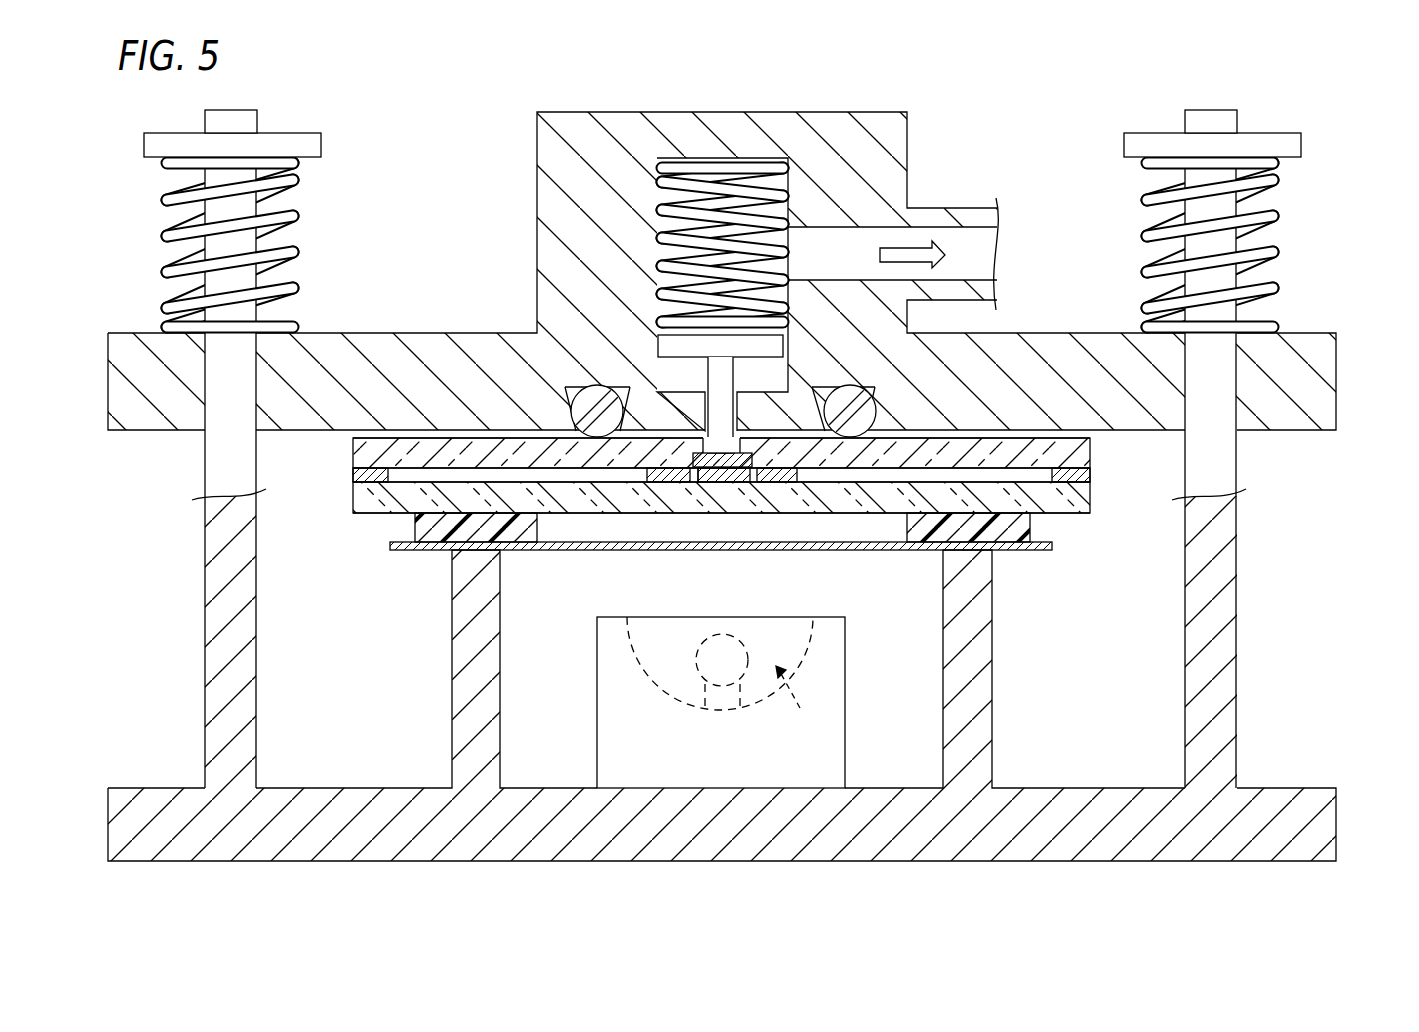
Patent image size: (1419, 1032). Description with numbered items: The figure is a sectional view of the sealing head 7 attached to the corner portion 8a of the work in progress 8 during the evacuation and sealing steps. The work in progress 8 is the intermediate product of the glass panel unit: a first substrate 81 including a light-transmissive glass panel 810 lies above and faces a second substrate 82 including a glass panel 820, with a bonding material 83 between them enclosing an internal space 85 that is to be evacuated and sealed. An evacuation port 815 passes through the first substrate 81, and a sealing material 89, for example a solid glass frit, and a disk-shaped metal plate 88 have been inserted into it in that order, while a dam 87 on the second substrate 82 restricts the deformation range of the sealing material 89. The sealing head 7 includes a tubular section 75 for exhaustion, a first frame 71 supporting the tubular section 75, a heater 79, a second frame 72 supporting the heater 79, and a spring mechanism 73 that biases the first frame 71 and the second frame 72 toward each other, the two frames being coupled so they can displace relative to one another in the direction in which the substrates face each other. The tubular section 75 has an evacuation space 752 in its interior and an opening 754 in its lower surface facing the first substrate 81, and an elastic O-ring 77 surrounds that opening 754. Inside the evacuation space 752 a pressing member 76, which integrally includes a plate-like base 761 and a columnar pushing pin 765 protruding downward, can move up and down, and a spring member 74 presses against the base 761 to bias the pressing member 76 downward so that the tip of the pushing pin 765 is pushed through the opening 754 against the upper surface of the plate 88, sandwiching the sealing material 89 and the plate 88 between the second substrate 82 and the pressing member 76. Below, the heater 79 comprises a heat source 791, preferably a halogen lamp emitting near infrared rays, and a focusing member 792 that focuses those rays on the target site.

The sealing head 7 is at (474, 118).
The first frame 71 is at (428, 352).
The second frame 72 is at (411, 850).
The spring mechanism 73 is at (1308, 170).
The spring member 74 is at (660, 198).
The tubular section 75 is at (823, 122).
The evacuation space 752 is at (664, 256).
The pressing member 76 is at (665, 381).
The base 761 is at (683, 346).
The pushing pin 765 is at (722, 384).
The O-ring 77 is at (853, 389).
The heater 79 is at (744, 701).
The heat source 791 is at (717, 658).
The focusing member 792 is at (801, 701).
The work in progress 8 is at (711, 490).
The first substrate 81 is at (1083, 456).
The glass panel 810 is at (362, 453).
The second substrate 82 is at (1083, 498).
The glass panel 820 is at (380, 496).
The bonding material 83 is at (1083, 479).
The internal space 85 is at (917, 476).
The evacuation port 815 is at (741, 447).
The plate 88 is at (753, 459).
The sealing material 89 is at (727, 478).
The dam 87 is at (780, 481).
The opening 754 is at (703, 481).
The corner portion 8a is at (367, 514).